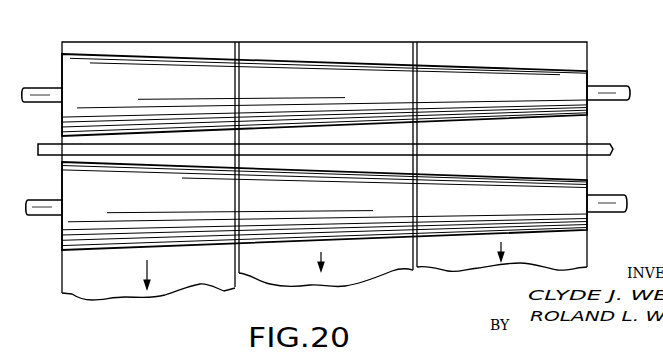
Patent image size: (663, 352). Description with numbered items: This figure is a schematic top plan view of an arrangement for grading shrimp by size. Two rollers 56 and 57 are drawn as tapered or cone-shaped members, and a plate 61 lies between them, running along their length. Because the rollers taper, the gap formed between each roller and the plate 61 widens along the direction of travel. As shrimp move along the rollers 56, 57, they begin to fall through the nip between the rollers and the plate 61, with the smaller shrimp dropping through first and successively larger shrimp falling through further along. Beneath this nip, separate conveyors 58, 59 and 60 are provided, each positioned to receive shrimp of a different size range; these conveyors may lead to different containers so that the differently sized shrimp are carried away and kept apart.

The tapered roller 56 is at (218, 70).
The tapered roller 57 is at (215, 232).
The conveyor 58 is at (226, 282).
The conveyor 59 is at (352, 278).
The conveyor 60 is at (466, 257).
The plate 61 is at (608, 147).